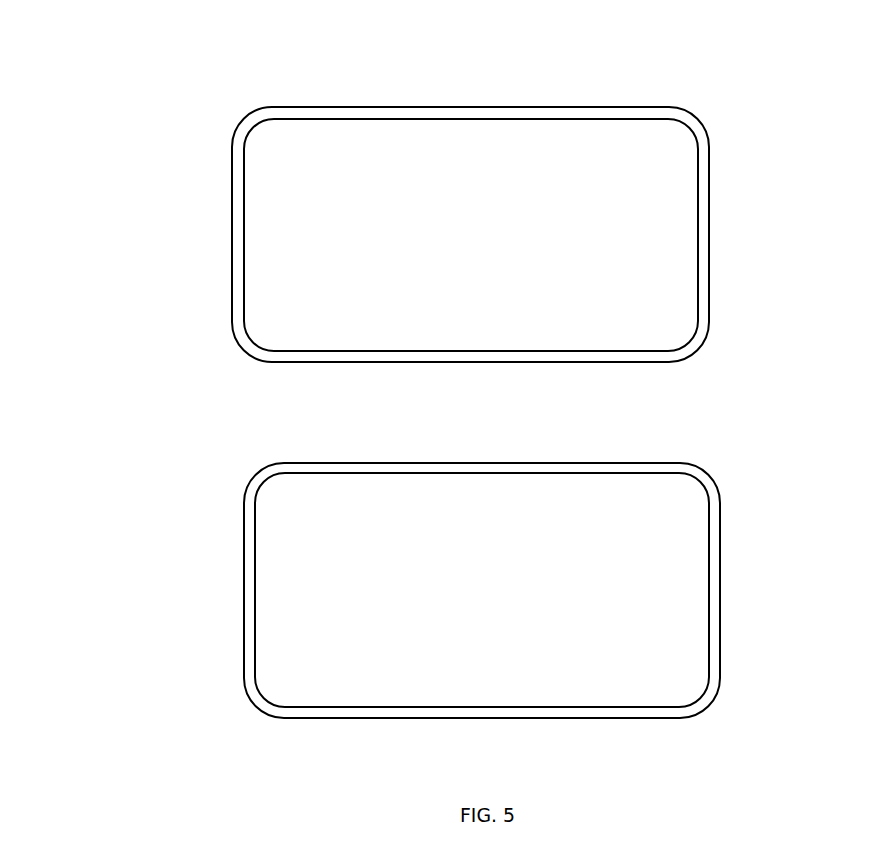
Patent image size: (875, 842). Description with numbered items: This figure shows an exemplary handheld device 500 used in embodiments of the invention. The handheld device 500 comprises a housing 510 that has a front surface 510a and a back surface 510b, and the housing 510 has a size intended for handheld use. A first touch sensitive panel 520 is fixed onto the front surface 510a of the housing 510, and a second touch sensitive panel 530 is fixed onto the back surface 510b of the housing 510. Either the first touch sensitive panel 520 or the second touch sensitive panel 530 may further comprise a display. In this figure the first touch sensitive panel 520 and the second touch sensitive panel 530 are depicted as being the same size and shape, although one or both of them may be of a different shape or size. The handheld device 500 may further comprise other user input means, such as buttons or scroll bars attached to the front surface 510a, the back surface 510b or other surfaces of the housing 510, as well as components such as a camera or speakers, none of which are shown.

The handheld device 500 is at (179, 112).
The housing 510 is at (712, 112).
The front surface 510a is at (710, 144).
The back surface 510b is at (725, 498).
The first touch sensitive panel 520 is at (675, 225).
The second touch sensitive panel 530 is at (686, 567).